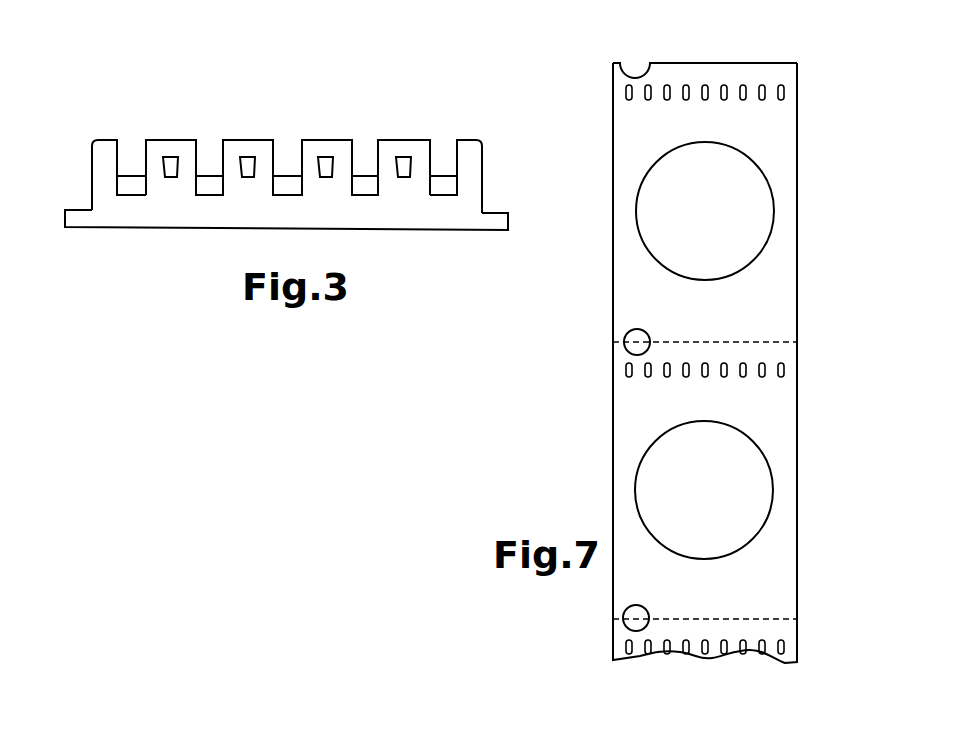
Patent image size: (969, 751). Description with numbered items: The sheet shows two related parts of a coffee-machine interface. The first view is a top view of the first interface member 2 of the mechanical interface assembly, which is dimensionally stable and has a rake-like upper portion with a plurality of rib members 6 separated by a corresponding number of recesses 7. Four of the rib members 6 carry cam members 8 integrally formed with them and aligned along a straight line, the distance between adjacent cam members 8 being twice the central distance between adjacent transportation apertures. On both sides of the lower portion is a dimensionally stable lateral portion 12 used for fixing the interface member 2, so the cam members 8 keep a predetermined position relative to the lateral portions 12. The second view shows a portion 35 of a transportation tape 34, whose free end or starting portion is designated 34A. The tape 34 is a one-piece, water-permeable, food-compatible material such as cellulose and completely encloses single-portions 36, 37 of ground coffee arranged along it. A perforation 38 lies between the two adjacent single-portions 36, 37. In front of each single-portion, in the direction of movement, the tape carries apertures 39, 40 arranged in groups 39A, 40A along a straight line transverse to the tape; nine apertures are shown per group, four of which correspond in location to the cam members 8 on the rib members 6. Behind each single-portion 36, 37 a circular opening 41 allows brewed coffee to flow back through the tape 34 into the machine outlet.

In FIG. 3, the first interface member 2 is at (291, 95).
In FIG. 3, the rib members 6 is at (343, 140).
In FIG. 3, the recesses 7 is at (129, 140).
In FIG. 3, the cam members 8 is at (170, 155).
In FIG. 3, the lateral portion 12 is at (74, 210).
In FIG. 7, the transportation tape 34 is at (858, 333).
In FIG. 7, the free end of the transportation tape 34A is at (768, 128).
In FIG. 7, the portion of the transportation tape 35 is at (829, 185).
In FIG. 7, the single-portion of ground coffee 36 is at (665, 197).
In FIG. 7, the single-portion of ground coffee 37 is at (657, 487).
In FIG. 7, the perforation 38 is at (772, 342).
In FIG. 7, the apertures 39 is at (743, 85).
In FIG. 7, the group of apertures 39A is at (740, 59).
In FIG. 7, the apertures 40 is at (686, 377).
In FIG. 7, the group of apertures 40A is at (742, 394).
In FIG. 7, the circular opening 41 is at (635, 343).